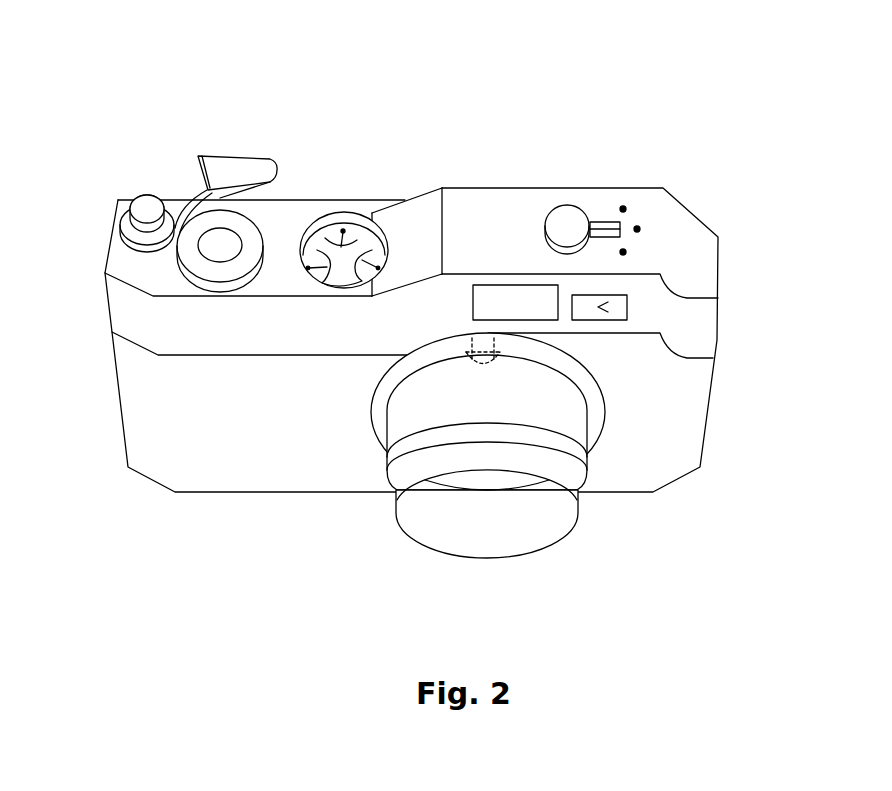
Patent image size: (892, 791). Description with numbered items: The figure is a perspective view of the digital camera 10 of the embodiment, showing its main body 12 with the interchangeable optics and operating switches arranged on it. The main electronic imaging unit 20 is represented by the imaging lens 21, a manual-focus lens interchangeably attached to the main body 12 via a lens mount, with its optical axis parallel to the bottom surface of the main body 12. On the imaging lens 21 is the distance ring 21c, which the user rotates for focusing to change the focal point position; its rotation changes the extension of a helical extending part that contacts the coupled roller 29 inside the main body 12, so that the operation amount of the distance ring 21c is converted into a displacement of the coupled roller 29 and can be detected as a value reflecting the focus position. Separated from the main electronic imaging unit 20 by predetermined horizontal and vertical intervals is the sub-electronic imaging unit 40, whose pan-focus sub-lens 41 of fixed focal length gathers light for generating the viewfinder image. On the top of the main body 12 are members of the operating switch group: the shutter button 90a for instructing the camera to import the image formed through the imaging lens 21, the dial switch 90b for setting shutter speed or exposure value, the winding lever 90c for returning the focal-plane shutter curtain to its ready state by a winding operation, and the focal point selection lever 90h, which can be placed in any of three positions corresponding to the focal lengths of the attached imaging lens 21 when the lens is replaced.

The digital camera 10 is at (447, 343).
The main body 12 is at (712, 375).
The main electronic imaging unit 20 is at (450, 480).
The imaging lens 21 is at (397, 527).
The distance ring 21c is at (425, 417).
The coupled roller 29 is at (468, 356).
The sub-electronic imaging unit 40 is at (598, 307).
The sub-lens 41 is at (608, 295).
The shutter button 90a is at (148, 212).
The dial switch 90b is at (252, 232).
The winding lever 90c is at (240, 173).
The focal point selection lever 90h is at (598, 220).